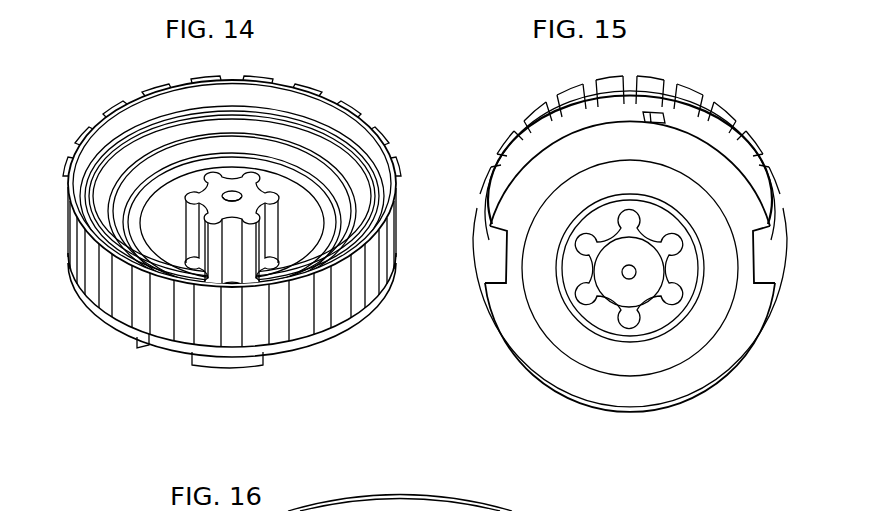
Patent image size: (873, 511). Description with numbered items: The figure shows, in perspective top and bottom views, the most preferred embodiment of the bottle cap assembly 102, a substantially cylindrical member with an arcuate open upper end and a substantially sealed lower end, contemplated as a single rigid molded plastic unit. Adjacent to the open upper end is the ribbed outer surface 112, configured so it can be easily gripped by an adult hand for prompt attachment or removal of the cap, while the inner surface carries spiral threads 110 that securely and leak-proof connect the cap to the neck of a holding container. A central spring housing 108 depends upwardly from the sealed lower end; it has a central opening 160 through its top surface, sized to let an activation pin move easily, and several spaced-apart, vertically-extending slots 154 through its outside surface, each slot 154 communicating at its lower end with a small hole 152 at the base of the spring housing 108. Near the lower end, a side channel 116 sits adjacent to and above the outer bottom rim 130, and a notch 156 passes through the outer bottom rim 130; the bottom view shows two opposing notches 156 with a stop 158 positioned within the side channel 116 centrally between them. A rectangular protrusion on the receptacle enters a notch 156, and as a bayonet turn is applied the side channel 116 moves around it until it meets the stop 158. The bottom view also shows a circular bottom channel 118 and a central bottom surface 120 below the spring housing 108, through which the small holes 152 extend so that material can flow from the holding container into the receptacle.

In FIG. 14, the bottle cap assembly 102 is at (112, 67).
In FIG. 15, the bottle cap assembly 102 is at (745, 50).
In FIG. 14, the spring housing 108 is at (203, 195).
In FIG. 14, the spiral threads 110 is at (287, 110).
In FIG. 14, the ribbed outer surface 112 is at (380, 130).
In FIG. 15, the ribbed outer surface 112 is at (510, 133).
In FIG. 14, the side channel 116 is at (277, 352).
In FIG. 15, the side channel 116 is at (707, 137).
In FIG. 15, the circular bottom channel 118 is at (613, 360).
In FIG. 15, the central bottom surface 120 is at (657, 328).
In FIG. 14, the outer bottom rim 130 is at (318, 350).
In FIG. 15, the outer bottom rim 130 is at (651, 393).
In FIG. 14, the small hole 152 is at (208, 244).
In FIG. 15, the small hole 152 is at (583, 247).
In FIG. 14, the vertically-extending slot 154 is at (177, 277).
In FIG. 14, the notch 156 is at (172, 360).
In FIG. 15, the notch 156 is at (492, 258).
In FIG. 15, the stop 158 is at (654, 110).
In FIG. 14, the central opening 160 is at (243, 195).
In FIG. 15, the central opening 160 is at (633, 268).